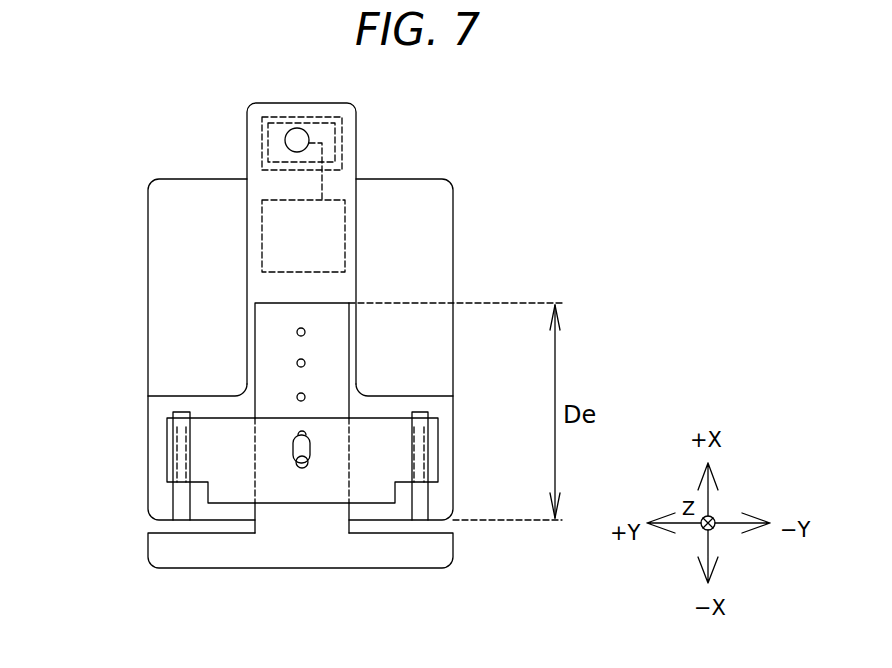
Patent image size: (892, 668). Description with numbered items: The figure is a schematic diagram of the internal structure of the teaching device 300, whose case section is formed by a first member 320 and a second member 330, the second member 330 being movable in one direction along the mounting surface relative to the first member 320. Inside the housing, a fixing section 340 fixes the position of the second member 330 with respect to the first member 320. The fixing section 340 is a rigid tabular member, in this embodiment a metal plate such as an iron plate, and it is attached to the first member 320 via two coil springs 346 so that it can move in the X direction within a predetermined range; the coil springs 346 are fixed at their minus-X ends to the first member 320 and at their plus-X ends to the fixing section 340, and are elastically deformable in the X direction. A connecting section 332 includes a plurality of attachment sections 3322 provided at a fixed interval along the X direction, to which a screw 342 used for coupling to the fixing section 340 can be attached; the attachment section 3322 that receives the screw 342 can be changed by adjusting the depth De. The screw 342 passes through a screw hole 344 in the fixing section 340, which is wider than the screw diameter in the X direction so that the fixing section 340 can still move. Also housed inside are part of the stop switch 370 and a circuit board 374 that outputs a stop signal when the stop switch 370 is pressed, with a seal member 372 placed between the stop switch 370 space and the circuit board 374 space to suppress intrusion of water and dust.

The teaching device 300 is at (528, 207).
The first member 320 is at (417, 190).
The second member 330 is at (400, 558).
The connecting section 332 is at (258, 349).
The attachment sections 3322 is at (306, 333).
The fixing section 340 is at (160, 489).
The screw 342 is at (293, 440).
The screw hole 344 is at (483, 333).
The coil springs 346 is at (173, 491).
The stop switch 370 is at (305, 122).
The seal member 372 is at (311, 142).
The circuit board 374 is at (258, 225).